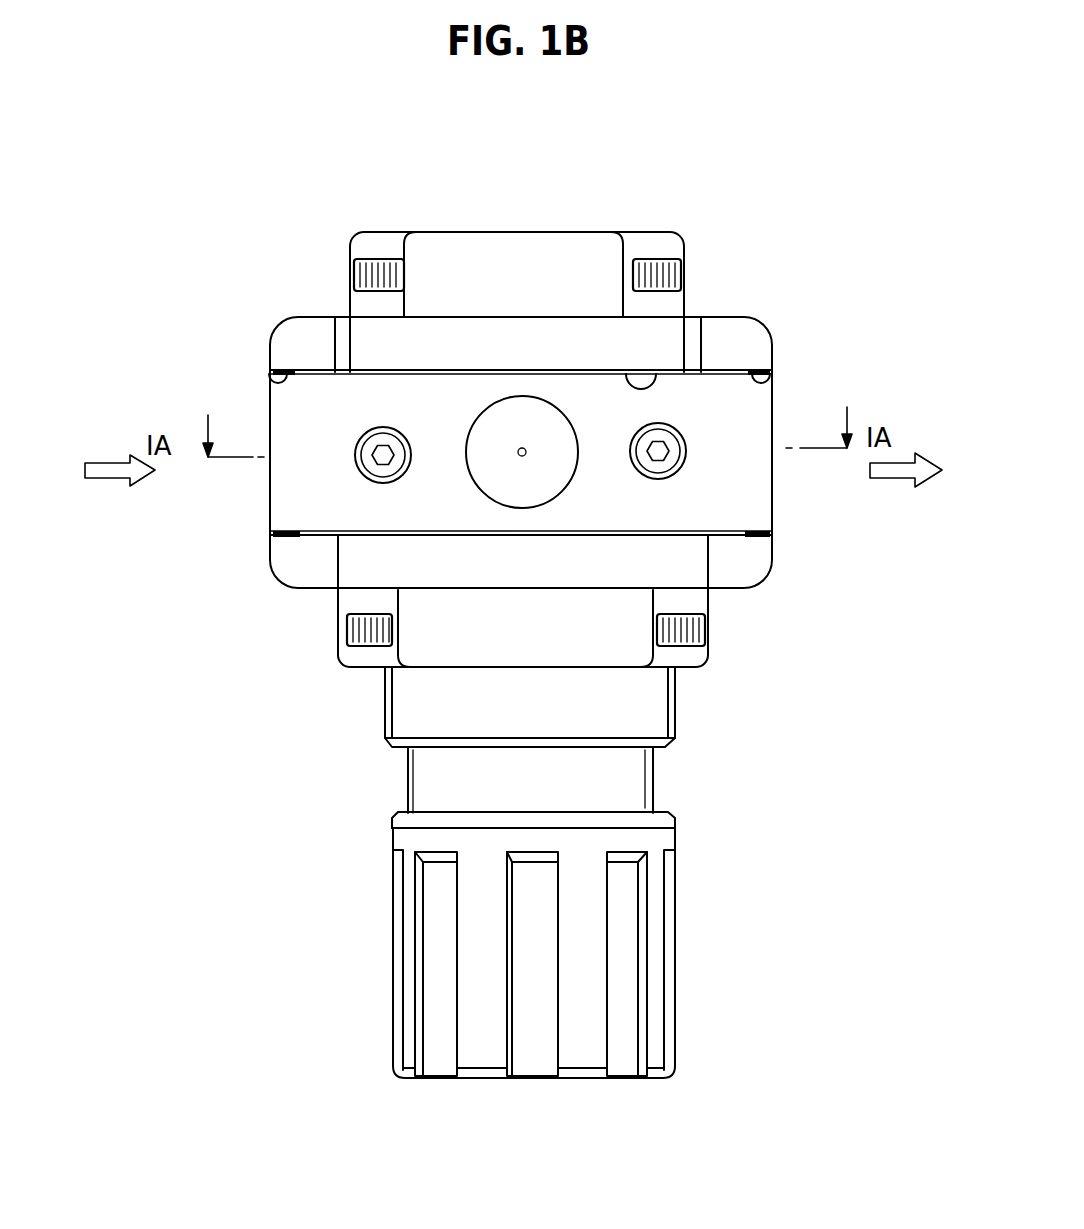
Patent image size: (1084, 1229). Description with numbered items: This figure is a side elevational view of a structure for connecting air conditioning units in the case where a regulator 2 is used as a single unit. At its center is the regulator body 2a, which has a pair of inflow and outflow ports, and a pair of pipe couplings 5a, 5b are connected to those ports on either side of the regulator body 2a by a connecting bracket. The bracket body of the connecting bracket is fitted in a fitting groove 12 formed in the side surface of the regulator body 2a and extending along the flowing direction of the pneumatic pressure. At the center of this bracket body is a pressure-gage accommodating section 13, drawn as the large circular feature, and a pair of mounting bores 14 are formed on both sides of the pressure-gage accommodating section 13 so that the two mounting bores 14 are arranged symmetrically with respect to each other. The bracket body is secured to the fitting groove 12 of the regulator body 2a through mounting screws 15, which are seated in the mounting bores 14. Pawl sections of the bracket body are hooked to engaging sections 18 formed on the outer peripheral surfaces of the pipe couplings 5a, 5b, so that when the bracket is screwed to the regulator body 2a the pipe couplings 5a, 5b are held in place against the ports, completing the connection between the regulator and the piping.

The regulator 2 is at (326, 198).
The regulator body 2a is at (437, 635).
The pipe coupling 5a is at (318, 568).
The pipe coupling 5b is at (750, 553).
The fitting groove 12 is at (640, 392).
The pressure-gage accommodating section 13 is at (522, 396).
The mounting bore 14 is at (365, 466).
The mounting screw 15 is at (372, 440).
The engaging section 18 is at (268, 390).